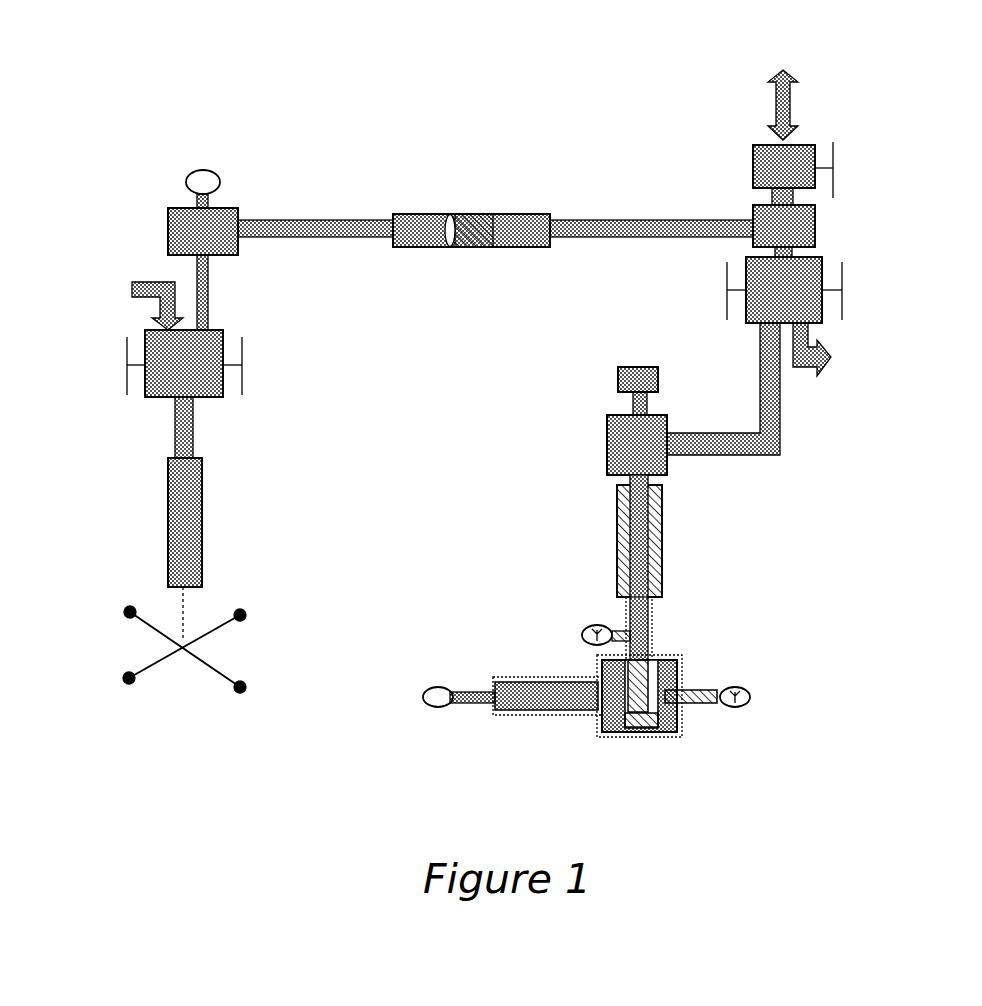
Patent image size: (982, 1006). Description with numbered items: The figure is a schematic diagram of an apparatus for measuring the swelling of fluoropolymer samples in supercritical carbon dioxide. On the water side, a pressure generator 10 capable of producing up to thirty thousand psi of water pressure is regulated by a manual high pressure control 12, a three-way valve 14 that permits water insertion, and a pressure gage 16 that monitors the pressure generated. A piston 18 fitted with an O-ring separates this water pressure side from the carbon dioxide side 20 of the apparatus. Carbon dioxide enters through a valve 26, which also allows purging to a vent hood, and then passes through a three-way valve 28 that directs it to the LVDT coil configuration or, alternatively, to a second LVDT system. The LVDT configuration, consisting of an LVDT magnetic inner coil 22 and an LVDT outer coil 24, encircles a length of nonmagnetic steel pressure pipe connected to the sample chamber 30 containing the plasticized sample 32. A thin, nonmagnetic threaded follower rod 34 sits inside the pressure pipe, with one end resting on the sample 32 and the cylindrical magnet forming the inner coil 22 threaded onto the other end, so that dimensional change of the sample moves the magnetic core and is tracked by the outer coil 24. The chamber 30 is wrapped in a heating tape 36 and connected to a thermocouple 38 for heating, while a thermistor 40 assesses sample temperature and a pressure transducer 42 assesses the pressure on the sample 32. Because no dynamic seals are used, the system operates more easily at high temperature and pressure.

The pressure generator 10 is at (168, 532).
The manual high pressure control 12 is at (153, 662).
The 3-way valve 14 is at (125, 372).
The pressure gage 16 is at (193, 172).
The piston 18 is at (468, 247).
The carbon dioxide side 20 is at (503, 215).
The LVDT magnetic inner coil 22 is at (662, 515).
The LVDT outer coil 24 is at (662, 548).
The valve 26 is at (833, 176).
The 3-way valve 28 is at (843, 297).
The sample chamber 30 is at (677, 737).
The plasticized sample 32 is at (678, 712).
The follower rod 34 is at (650, 618).
The heating tape 36 is at (650, 738).
The thermocouple 38 is at (580, 633).
The thermistor 40 is at (698, 690).
The pressure transducer 42 is at (465, 707).